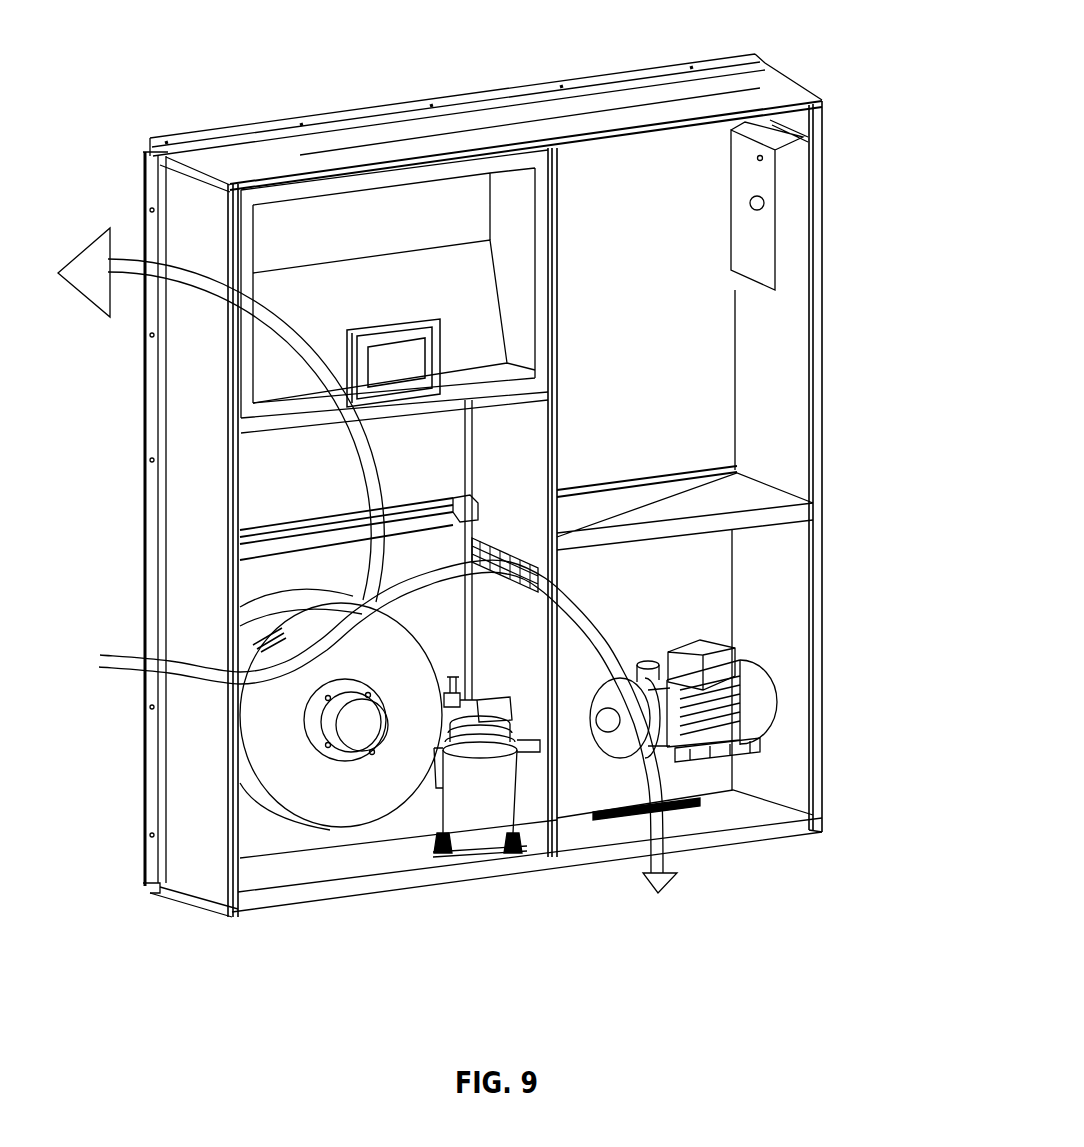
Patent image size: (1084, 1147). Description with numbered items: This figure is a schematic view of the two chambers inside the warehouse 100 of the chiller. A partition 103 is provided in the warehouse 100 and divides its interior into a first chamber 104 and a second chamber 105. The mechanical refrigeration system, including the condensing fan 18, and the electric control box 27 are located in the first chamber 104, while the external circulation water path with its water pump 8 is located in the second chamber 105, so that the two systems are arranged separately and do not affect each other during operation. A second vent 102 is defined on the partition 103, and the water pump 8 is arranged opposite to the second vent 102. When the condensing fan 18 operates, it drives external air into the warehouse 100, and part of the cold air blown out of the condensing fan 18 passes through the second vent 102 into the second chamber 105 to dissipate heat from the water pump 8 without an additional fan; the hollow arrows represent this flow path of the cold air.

The warehouse 100 is at (455, 128).
The electric control box 27 is at (352, 291).
The first chamber 104 is at (270, 483).
The second vent 102 is at (512, 548).
The second chamber 105 is at (697, 600).
The condensing fan 18 is at (337, 778).
The partition 103 is at (538, 680).
The water pump 8 is at (745, 713).